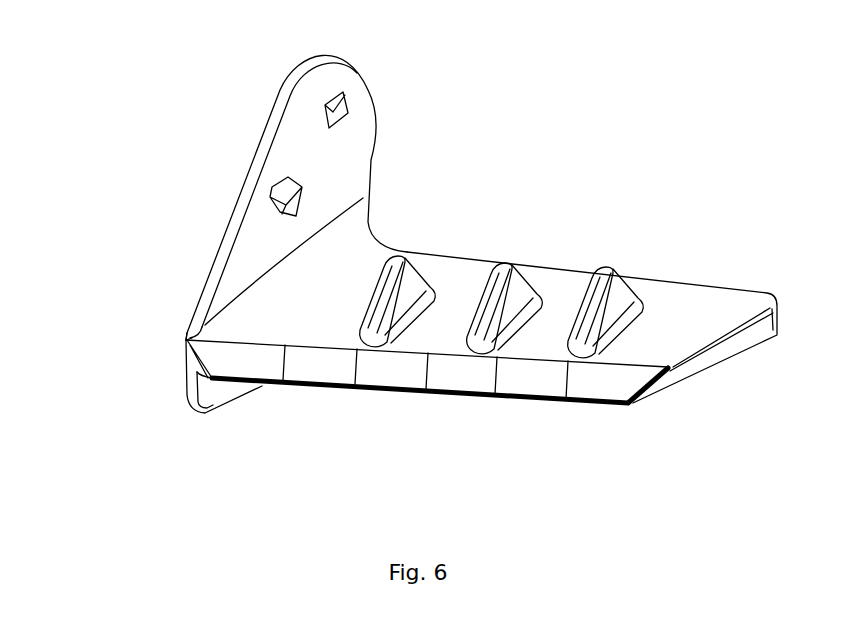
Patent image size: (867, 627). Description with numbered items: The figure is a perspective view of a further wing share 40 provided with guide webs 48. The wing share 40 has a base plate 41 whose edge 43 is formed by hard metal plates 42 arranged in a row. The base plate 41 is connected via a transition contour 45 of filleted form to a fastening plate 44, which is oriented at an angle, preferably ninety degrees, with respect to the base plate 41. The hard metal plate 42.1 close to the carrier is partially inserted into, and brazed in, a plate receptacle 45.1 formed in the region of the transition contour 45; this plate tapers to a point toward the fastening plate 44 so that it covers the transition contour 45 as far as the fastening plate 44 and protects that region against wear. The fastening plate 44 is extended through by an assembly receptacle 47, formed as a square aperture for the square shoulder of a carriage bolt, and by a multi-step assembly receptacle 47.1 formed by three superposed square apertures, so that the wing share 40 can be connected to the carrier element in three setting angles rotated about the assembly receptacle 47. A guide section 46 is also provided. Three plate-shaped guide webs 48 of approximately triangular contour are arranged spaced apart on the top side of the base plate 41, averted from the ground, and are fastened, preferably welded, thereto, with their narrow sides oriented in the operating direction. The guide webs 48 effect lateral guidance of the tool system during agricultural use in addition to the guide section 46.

The wing share 40 is at (597, 148).
The base plate 41 is at (685, 300).
The hard metal plates 42 is at (608, 382).
The hard metal plate close to the carrier 42.1 is at (247, 362).
The edge 43 is at (385, 396).
The fastening plate 44 is at (360, 155).
The transition contour 45 is at (245, 317).
The plate receptacle 45.1 is at (188, 335).
The guide section 46 is at (228, 393).
The assembly receptacle 47 is at (327, 108).
The multi-step assembly receptacle 47.1 is at (280, 197).
The guide webs 48 is at (603, 268).